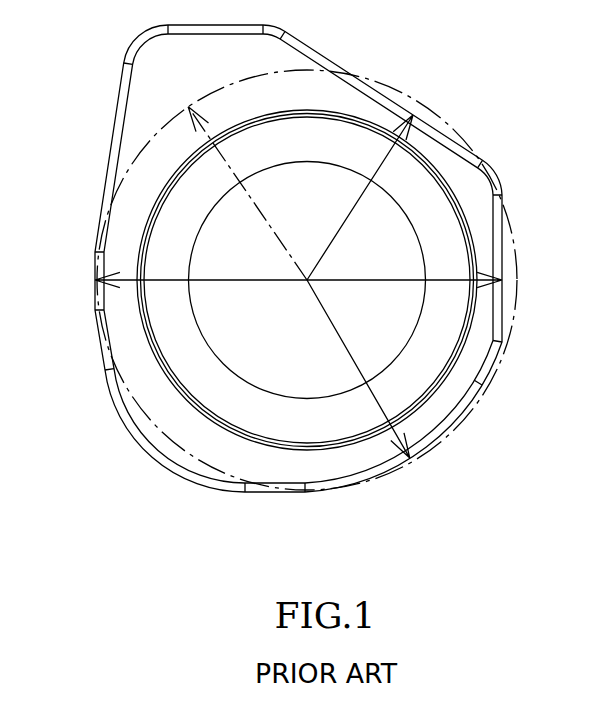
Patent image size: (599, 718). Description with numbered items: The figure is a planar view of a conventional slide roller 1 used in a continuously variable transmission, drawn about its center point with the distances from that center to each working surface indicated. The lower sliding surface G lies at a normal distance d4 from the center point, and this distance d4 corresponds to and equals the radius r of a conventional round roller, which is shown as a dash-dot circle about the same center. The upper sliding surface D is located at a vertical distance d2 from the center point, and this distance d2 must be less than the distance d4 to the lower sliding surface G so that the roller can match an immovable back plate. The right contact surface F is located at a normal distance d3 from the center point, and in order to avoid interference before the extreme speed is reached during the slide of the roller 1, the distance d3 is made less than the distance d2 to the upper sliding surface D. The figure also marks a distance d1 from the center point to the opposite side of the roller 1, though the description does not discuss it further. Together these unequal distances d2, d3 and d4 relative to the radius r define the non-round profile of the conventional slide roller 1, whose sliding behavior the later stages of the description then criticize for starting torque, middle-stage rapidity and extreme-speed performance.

The conventional slide roller 1 is at (100, 127).
The upper sliding surface D is at (427, 118).
The right contact surface F is at (502, 276).
The lower sliding surface G is at (410, 463).
The distance from center to left edge d1 is at (201, 271).
The vertical distance between the upper sliding surface and the center point d2 is at (360, 197).
The normal distance between the right contact surface and the center point d3 is at (404, 271).
The normal distance between the lower sliding surface and the center point d4 is at (358, 369).
The radius of the conventional round roller r is at (247, 193).